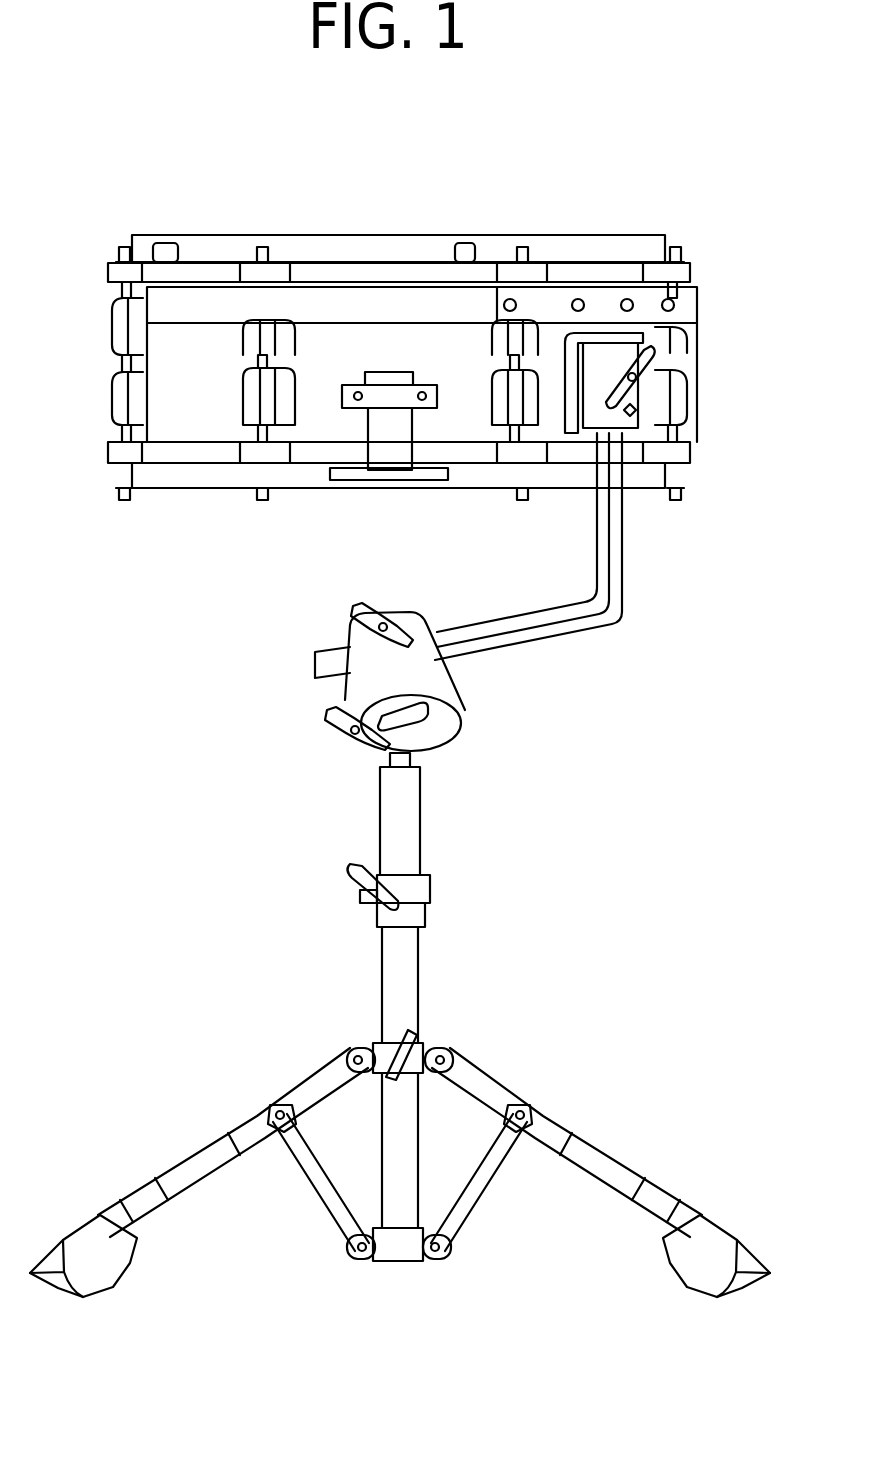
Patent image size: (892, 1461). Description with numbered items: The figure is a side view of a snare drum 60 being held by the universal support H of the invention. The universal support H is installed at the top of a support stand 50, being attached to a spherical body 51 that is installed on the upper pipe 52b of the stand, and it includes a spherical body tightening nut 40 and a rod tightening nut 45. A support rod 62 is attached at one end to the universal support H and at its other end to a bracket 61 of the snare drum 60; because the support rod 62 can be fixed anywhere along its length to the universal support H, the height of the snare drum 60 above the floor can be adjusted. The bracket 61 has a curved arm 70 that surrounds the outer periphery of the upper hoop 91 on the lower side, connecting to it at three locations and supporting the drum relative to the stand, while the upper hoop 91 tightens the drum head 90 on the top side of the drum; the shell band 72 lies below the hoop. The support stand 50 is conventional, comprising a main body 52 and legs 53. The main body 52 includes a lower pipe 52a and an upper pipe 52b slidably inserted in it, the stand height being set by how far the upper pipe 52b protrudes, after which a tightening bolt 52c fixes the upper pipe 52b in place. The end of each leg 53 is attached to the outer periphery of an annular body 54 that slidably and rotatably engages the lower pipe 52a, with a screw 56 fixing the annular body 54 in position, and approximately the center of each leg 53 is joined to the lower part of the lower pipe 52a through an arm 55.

The drum head 90 is at (192, 235).
The upper hoop 91 is at (110, 272).
The shell band 72 is at (343, 300).
The curved arm 70 is at (397, 282).
The snare drum 60 is at (647, 232).
The bracket 61 is at (640, 390).
The support rod 62 is at (623, 548).
The rod tightening nut 45 is at (355, 612).
The universal support H is at (467, 710).
The spherical body 51 is at (392, 698).
The spherical body tightening nut 40 is at (328, 712).
The support stand 50 is at (430, 945).
The main body 52 is at (422, 995).
The lower pipe 52a is at (382, 990).
The upper pipe 52b is at (422, 830).
The tightening bolt 52c is at (350, 863).
The leg 53 is at (192, 1145).
The annular body 54 is at (377, 1038).
The arm 55 is at (310, 1183).
The screw 56 is at (415, 1033).